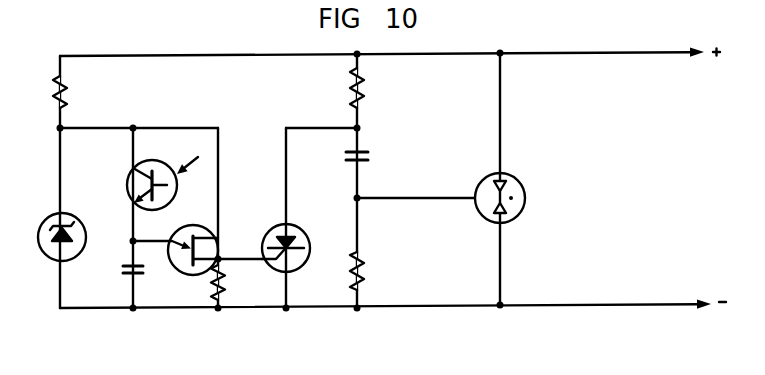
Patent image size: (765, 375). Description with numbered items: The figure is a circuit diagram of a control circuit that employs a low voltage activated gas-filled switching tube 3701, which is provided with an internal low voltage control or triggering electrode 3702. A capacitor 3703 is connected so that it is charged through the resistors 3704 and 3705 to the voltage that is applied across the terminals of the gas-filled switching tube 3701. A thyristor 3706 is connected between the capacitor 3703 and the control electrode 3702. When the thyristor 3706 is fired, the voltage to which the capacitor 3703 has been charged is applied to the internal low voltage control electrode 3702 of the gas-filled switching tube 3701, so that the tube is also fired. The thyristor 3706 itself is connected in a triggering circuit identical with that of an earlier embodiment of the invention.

The gas-filled switching tube 3701 is at (530, 179).
The internal low voltage control electrode 3702 is at (415, 189).
The capacitor 3703 is at (391, 157).
The resistor 3704 is at (390, 88).
The resistor 3705 is at (394, 271).
The thyristor 3706 is at (309, 220).